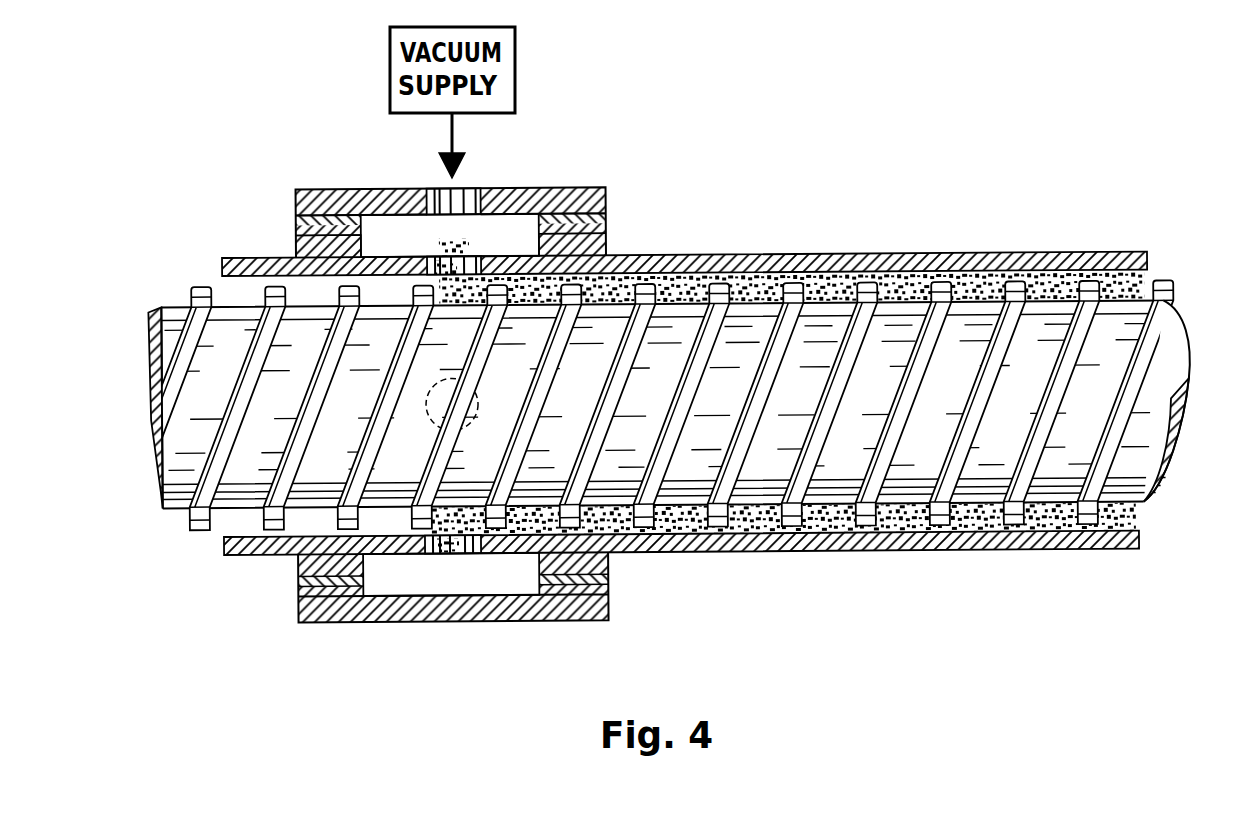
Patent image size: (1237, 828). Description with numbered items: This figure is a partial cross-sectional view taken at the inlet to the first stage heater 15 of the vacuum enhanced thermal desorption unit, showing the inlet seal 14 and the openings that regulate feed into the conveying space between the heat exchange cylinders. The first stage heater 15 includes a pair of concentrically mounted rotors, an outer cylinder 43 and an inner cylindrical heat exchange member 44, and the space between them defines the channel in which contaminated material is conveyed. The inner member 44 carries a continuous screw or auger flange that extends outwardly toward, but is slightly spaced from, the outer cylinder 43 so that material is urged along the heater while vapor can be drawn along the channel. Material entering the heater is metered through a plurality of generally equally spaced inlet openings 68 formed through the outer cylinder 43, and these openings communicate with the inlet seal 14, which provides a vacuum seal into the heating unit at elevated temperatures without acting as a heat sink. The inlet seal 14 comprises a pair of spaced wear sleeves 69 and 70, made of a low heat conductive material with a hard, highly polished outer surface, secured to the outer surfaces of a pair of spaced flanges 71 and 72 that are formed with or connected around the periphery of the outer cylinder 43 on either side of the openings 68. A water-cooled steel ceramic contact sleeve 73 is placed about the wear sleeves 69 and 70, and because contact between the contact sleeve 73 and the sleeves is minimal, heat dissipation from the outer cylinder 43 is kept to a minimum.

The inlet seal 14 is at (276, 572).
The first stage heater 15 is at (826, 568).
The outer cylinder 43 is at (940, 254).
The inner cylindrical heat exchange member 44 is at (1163, 385).
The inlet openings 68 is at (445, 260).
The wear sleeve 69 is at (297, 230).
The wear sleeve 70 is at (607, 228).
The flange 71 is at (297, 248).
The flange 72 is at (607, 247).
The steel ceramic contact sleeve 73 is at (572, 160).